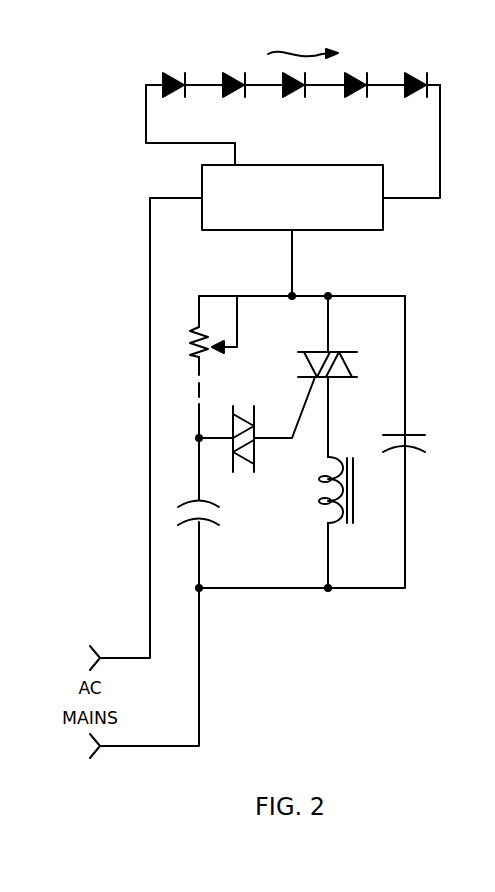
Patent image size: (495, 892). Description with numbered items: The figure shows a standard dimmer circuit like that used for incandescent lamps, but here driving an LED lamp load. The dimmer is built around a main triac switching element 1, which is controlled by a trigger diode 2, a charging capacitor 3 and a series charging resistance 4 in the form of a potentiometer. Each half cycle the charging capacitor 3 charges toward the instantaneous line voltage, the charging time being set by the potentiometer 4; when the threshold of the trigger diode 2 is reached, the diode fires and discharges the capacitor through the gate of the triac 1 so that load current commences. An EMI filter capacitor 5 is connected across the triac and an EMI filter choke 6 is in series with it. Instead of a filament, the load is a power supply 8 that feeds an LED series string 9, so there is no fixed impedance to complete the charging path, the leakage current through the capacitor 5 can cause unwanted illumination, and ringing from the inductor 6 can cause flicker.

The main triac switching element 1 is at (350, 363).
The trigger diode 2 is at (237, 412).
The charging capacitor 3 is at (220, 512).
The series charging resistance 4 is at (197, 330).
The EMI filter capacitor 5 is at (425, 443).
The EMI filter choke 6 is at (329, 524).
The power supply 8 is at (202, 170).
The LED series string 9 is at (292, 96).